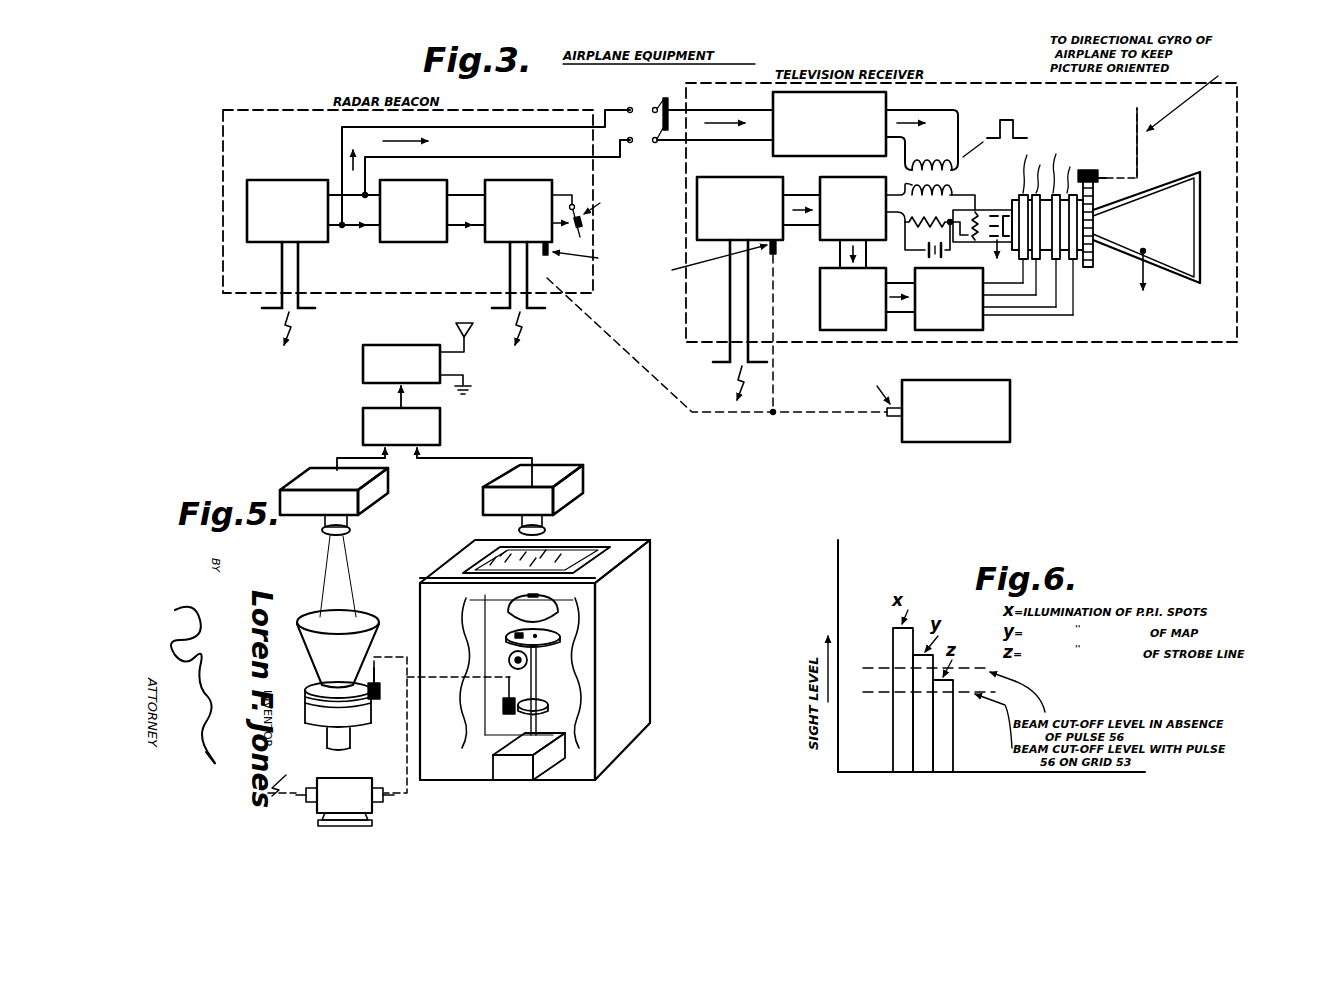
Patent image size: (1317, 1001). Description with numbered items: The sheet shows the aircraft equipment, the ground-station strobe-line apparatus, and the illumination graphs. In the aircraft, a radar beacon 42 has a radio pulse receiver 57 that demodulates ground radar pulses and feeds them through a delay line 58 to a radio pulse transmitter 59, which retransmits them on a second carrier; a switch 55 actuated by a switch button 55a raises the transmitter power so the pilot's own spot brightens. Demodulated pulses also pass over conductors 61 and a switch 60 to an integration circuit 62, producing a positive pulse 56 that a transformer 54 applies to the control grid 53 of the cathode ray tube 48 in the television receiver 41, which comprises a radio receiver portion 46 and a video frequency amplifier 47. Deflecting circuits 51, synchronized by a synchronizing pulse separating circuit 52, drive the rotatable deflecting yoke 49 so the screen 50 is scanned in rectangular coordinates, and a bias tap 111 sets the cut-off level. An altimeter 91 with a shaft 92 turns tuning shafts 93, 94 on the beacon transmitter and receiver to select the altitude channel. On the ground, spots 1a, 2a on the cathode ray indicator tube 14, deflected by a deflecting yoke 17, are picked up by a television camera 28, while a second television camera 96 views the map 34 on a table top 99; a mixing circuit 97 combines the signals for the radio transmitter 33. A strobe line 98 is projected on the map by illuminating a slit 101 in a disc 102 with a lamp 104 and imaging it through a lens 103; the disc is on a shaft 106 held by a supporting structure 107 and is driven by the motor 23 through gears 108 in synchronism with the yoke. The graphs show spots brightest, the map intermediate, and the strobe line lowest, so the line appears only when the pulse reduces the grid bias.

In FIG. 3, the radar beacon 42 is at (275, 104).
In FIG. 3, the radio pulse receiver 57 is at (285, 168).
In FIG. 3, the delay line 58 is at (385, 244).
In FIG. 3, the radio pulse transmitter 59 is at (503, 244).
In FIG. 3, the conductors 61 is at (500, 128).
In FIG. 3, the switch 60 is at (647, 96).
In FIG. 3, the switch 55 is at (590, 219).
In FIG. 3, the switch button 55a is at (582, 234).
In FIG. 3, the tuning shaft 93 is at (548, 255).
In FIG. 3, the tuning shaft 94 is at (777, 248).
In FIG. 3, the radio transmitter 33 is at (403, 333).
In FIG. 3, the mixing circuit 97 is at (441, 432).
In FIG. 3, the television receiver 41 is at (976, 82).
In FIG. 3, the integration circuit 62 is at (773, 98).
In FIG. 3, the transformer 54 is at (928, 180).
In FIG. 3, the radio receiver portion 46 is at (746, 165).
In FIG. 3, the video frequency amplifier 47 is at (820, 180).
In FIG. 3, the bias tap 111 is at (900, 240).
In FIG. 3, the control grid 53 is at (978, 210).
In FIG. 3, the positive pulse 56 is at (1013, 118).
In FIG. 3, the rotatable deflecting yoke 49 is at (1015, 200).
In FIG. 3, the cathode ray tube 48 is at (1170, 180).
In FIG. 3, the screen 50 is at (1193, 226).
In FIG. 3, the synchronizing pulse separating circuit 52 is at (820, 303).
In FIG. 3, the deflecting circuits 51 is at (983, 323).
In FIG. 3, the altimeter 91 is at (978, 362).
In FIG. 3, the altimeter shaft 92 is at (890, 416).
In FIG. 5, the television camera 28 is at (318, 468).
In FIG. 5, the television camera 96 is at (560, 470).
In FIG. 5, the cathode ray indicator tube 14 is at (322, 618).
In FIG. 5, the spot 2a is at (350, 612).
In FIG. 5, the spot 1a is at (370, 620).
In FIG. 5, the deflecting yoke 17 is at (312, 702).
In FIG. 5, the motor 23 is at (372, 806).
In FIG. 5, the table top 99 is at (630, 551).
In FIG. 5, the map 34 is at (588, 556).
In FIG. 5, the strobe line 98 is at (522, 545).
In FIG. 5, the slit 101 is at (510, 614).
In FIG. 5, the lens 103 is at (560, 607).
In FIG. 5, the disc 102 is at (560, 636).
In FIG. 5, the shaft 106 is at (545, 662).
In FIG. 5, the lamp 104 is at (509, 660).
In FIG. 5, the gears 108 is at (522, 714).
In FIG. 5, the supporting structure 107 is at (525, 762).